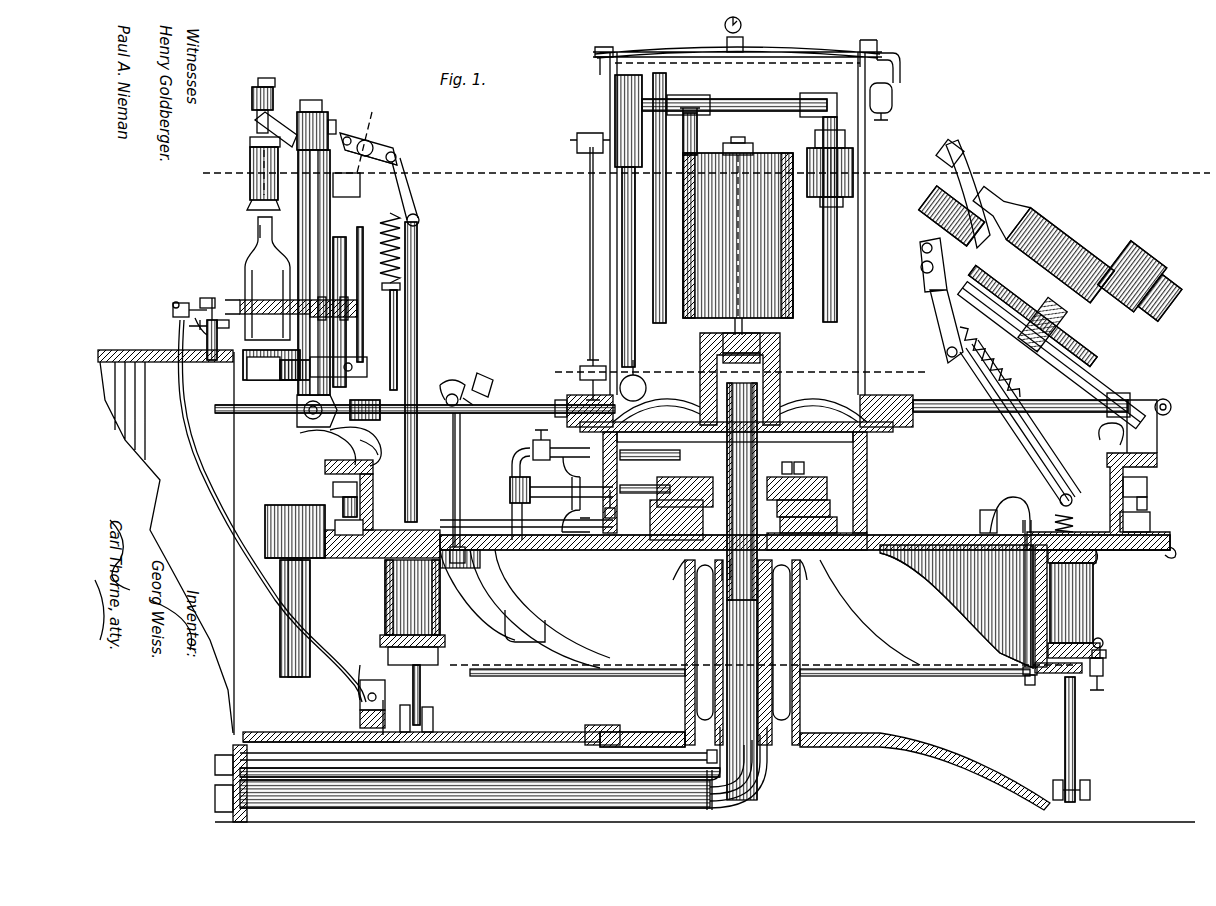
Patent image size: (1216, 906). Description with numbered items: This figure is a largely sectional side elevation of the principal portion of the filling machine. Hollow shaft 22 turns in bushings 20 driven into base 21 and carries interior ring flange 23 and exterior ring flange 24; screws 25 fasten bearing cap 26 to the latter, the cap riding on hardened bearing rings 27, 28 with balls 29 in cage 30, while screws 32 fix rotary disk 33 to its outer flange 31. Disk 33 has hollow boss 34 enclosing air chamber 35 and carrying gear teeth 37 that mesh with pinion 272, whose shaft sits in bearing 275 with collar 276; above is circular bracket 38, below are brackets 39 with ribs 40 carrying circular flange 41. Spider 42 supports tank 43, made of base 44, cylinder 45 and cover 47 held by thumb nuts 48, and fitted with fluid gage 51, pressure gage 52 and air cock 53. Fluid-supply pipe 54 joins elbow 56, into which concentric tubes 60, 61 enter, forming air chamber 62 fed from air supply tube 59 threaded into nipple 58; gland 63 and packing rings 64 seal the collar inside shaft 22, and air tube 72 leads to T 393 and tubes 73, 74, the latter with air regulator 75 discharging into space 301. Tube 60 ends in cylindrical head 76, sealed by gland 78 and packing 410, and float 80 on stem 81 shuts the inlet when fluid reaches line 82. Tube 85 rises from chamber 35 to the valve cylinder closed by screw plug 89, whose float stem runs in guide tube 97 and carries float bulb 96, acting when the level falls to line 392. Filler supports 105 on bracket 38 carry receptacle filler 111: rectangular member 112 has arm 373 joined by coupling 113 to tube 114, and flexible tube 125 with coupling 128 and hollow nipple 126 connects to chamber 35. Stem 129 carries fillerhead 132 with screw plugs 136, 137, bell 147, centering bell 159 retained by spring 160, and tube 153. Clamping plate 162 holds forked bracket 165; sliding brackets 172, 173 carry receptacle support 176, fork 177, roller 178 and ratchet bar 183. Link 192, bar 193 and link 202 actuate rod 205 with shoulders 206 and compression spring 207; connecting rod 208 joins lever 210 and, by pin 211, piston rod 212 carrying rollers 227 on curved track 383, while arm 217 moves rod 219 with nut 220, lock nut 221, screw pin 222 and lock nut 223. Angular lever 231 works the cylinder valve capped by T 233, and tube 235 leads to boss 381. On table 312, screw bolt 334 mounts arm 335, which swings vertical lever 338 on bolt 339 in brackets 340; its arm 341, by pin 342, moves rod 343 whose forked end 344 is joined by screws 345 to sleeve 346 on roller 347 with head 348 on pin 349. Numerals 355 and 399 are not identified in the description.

The bushings 20 is at (805, 575).
The base 21 is at (640, 734).
The hollow shaft 22 is at (760, 615).
The interior ring flange 23 is at (722, 568).
The exterior ring flange 24 is at (830, 485).
The screws 25 is at (806, 460).
The bearing cap 26 is at (835, 505).
The hardened bearing ring 27 is at (840, 520).
The hardened bearing ring 28 is at (870, 538).
The balls 29 is at (650, 530).
The cage 30 is at (675, 540).
The outer flange 31 is at (860, 550).
The screws 32 is at (599, 506).
The rotary disk 33 is at (385, 570).
The circular hollow boss 34 is at (1140, 514).
The circular chamber 35 is at (1120, 550).
The gear teeth 37 is at (1140, 552).
The circular bracket 38 is at (1160, 455).
The brackets 39 is at (530, 632).
The ribs 40 is at (950, 590).
The circular flange 41 is at (1045, 675).
The spider 42 is at (868, 460).
The tank 43 is at (840, 135).
The base 44 is at (868, 397).
The cylinder 45 is at (866, 283).
The cover 47 is at (805, 50).
The thumb nuts 48 is at (885, 48).
The fluid gage 51 is at (589, 258).
The pressure gage 52 is at (748, 27).
The air cock 53 is at (892, 98).
The fluid-supply pipe 54 is at (505, 781).
The elbow 56 is at (768, 770).
The nipple 58 is at (700, 774).
The air supply tube 59 is at (625, 752).
The tube 60 is at (716, 605).
The tube 61 is at (700, 620).
The air chamber 62 is at (775, 590).
The gland 63 is at (787, 459).
The packing rings 64 is at (727, 550).
The air tube 72 is at (565, 518).
The air tube 73 is at (512, 521).
The air tube 74 is at (546, 441).
The air regulator 75 is at (512, 447).
The cylindrical head 76 is at (775, 368).
The gland 78 is at (782, 345).
The float 80 is at (793, 250).
The stem 81 is at (762, 332).
The line 82 is at (525, 173).
The tube 85 is at (698, 140).
The screw plug 89 is at (605, 62).
The float bulb 96 is at (628, 377).
The vertical guide tube 97 is at (628, 285).
The filler supports 105 is at (318, 445).
The receptacle filler 111 is at (398, 152).
The rectangular member 112 is at (312, 428).
The coupling 113 is at (365, 401).
The tube 114 is at (505, 407).
The flexible tube 125 is at (372, 450).
The hollow nipple 126 is at (343, 505).
The coupling 128 is at (333, 488).
The stem 129 is at (310, 240).
The cylindrical fillerhead 132 is at (257, 128).
The screw plug 136 is at (322, 104).
The screw plug 137 is at (275, 82).
The bell 147 is at (252, 145).
The tube 153 is at (357, 263).
The centering bell 159 is at (252, 208).
The spring 160 is at (258, 165).
The clamping plate 162 is at (337, 188).
The forked bracket 165 is at (414, 190).
The bracket 172 is at (333, 245).
The bracket 173 is at (350, 300).
The receptacle support 176 is at (293, 382).
The fork 177 is at (245, 304).
The roller 178 is at (270, 380).
The bar 183 is at (355, 357).
The link 192 is at (364, 135).
The bar 193 is at (372, 140).
The link 202 is at (397, 160).
The rod 205 is at (398, 305).
The annular shoulders 206 is at (401, 287).
The compression spring 207 is at (401, 265).
The connecting rod 208 is at (418, 250).
The lever 210 is at (454, 385).
The pin 211 is at (455, 448).
The piston rod 212 is at (1065, 722).
The arm 217 is at (1013, 498).
The rod 219 is at (1025, 632).
The nut 220 is at (1023, 672).
The lock nut 221 is at (1025, 685).
The screw pin 222 is at (485, 375).
The lock nut 223 is at (1023, 525).
The rollers 227 is at (1055, 782).
The angular lever 231 is at (1098, 692).
The T 233 is at (1104, 642).
The tube 235 is at (1095, 594).
The pinion 272 is at (267, 560).
The bearing 275 is at (288, 640).
The collar 276 is at (280, 623).
The space 301 is at (739, 96).
The table 312 is at (112, 365).
The screw bolt 334 is at (200, 298).
The horizontal arm 335 is at (212, 298).
The vertical lever 338 is at (195, 320).
The horizontal bolt 339 is at (210, 362).
The brackets 340 is at (200, 327).
The arm 341 is at (173, 310).
The pin 342 is at (215, 322).
The rod 343 is at (185, 410).
The forked end 344 is at (360, 688).
The screws 345 is at (360, 700).
The sleeve 346 is at (360, 717).
The vertical roller 347 is at (383, 712).
The enlarged head 348 is at (362, 680).
The vertical pin 349 is at (330, 742).
The pipe 355 is at (420, 690).
The arm 373 is at (353, 450).
The boss 381 is at (1097, 560).
The curved track 383 is at (495, 733).
The horizontal line 392 is at (555, 372).
The T 393 is at (510, 490).
The bottle 399 is at (258, 270).
The packing 410 is at (775, 395).